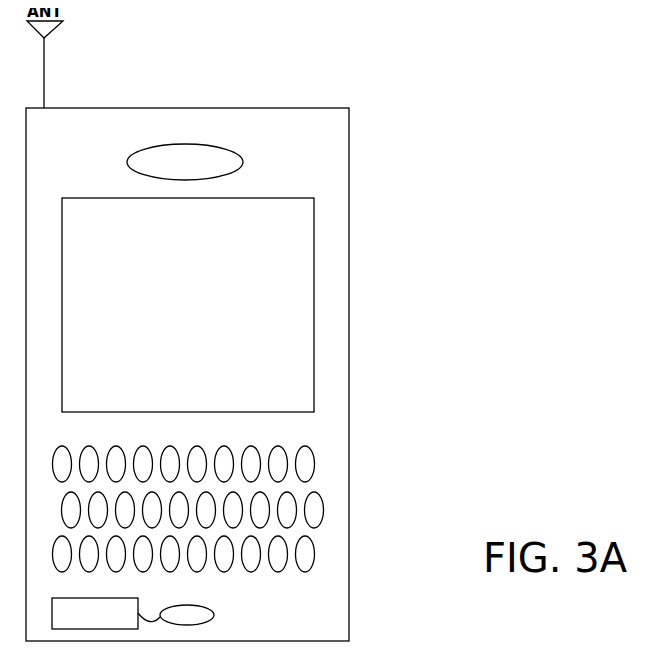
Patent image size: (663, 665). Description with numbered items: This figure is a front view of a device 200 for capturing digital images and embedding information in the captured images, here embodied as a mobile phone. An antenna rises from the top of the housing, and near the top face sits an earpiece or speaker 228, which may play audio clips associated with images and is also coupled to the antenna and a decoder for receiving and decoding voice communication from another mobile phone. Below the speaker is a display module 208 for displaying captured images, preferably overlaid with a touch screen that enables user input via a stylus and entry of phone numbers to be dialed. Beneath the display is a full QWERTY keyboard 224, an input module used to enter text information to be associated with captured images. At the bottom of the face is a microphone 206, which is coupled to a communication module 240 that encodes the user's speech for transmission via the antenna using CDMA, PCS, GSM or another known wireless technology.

The device 200 is at (355, 217).
The earpiece or speaker 228 is at (190, 144).
The display module 208 is at (314, 278).
The full QWERTY keyboard 224 is at (348, 511).
The communication module 240 is at (85, 618).
The microphone 206 is at (187, 605).